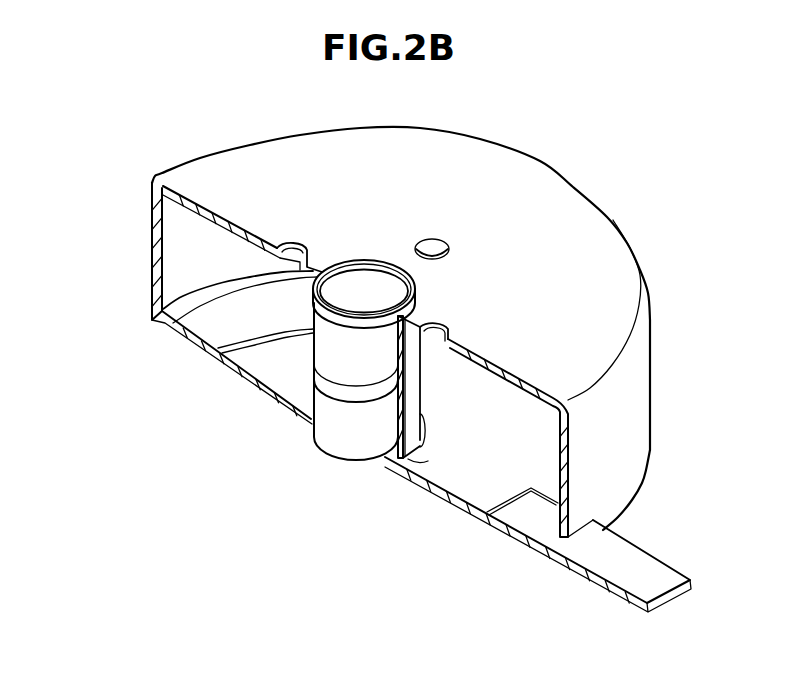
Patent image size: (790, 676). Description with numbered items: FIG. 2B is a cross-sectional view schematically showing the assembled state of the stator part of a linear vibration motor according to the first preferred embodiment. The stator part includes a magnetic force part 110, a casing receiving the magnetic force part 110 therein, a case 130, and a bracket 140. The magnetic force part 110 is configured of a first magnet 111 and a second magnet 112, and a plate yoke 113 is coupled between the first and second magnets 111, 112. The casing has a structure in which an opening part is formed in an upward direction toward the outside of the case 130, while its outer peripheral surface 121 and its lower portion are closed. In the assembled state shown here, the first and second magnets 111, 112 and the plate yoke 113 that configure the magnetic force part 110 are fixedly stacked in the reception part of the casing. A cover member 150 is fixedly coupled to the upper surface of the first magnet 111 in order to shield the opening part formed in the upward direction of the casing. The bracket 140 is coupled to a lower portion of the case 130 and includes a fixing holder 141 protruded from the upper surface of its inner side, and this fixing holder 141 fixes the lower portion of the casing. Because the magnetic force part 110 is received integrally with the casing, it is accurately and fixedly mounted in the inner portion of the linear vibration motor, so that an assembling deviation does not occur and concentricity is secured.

The magnetic force part 110 is at (210, 381).
The first magnet 111 is at (328, 342).
The second magnet 112 is at (325, 428).
The plate yoke 113 is at (333, 384).
The outer peripheral surface 121 is at (413, 387).
The case 130 is at (635, 418).
The bracket 140 is at (498, 472).
The fixing holder 141 is at (416, 470).
The cover member 150 is at (333, 294).